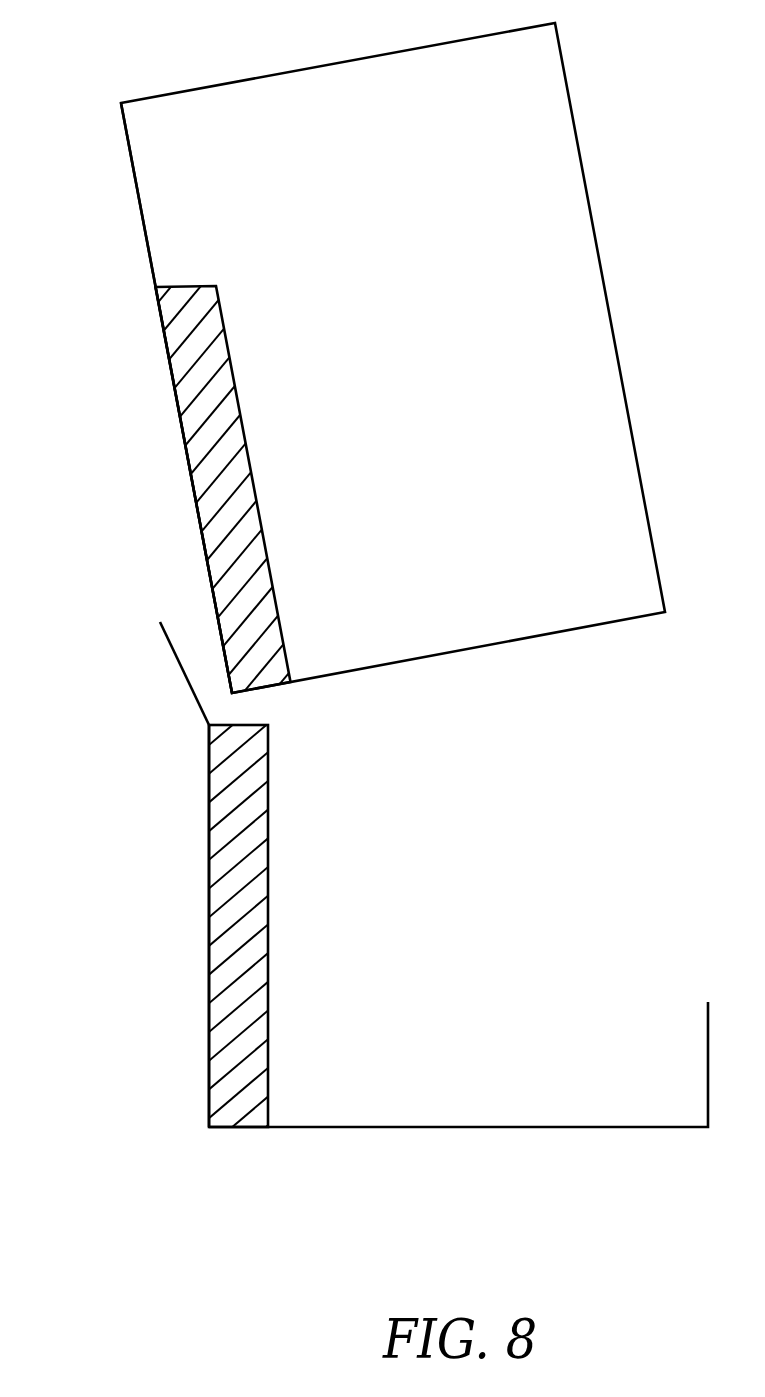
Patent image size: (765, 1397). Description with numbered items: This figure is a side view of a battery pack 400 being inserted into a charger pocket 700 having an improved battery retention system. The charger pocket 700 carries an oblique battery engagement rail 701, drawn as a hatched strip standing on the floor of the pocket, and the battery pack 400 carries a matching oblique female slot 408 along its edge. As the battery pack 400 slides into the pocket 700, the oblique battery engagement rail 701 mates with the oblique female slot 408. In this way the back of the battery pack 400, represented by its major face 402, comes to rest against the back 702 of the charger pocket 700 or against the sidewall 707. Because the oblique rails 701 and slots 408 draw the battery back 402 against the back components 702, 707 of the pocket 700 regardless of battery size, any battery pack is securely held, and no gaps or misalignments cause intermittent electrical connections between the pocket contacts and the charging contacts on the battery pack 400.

The battery pack 400 is at (421, 349).
The major face 402 is at (149, 254).
The oblique female slots 408 is at (195, 496).
The charger pocket 700 is at (446, 914).
The oblique battery engagement rails 701 is at (269, 810).
The back of the charger pocket 702 is at (181, 666).
The sidewall 707 is at (209, 927).